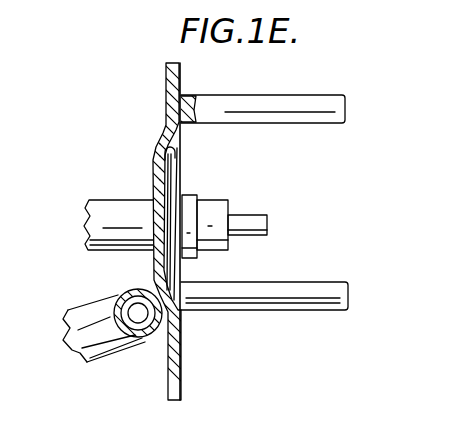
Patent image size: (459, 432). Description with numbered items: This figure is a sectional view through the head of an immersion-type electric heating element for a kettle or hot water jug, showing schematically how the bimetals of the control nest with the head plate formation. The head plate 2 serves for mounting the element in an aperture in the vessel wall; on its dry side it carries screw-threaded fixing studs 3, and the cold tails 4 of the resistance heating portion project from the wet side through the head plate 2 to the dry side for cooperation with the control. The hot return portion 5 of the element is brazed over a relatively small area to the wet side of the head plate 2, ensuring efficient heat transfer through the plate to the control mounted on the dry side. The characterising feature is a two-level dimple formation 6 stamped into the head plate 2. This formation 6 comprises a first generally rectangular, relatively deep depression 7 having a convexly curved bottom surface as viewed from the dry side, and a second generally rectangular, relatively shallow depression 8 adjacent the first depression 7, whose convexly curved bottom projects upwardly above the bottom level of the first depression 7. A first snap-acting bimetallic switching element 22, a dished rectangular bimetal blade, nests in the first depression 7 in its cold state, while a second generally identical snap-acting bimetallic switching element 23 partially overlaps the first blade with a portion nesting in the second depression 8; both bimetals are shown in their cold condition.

The head plate 2 is at (165, 78).
The screw-threaded fixing studs 3 is at (268, 103).
The cold tails 4 is at (258, 213).
The hot return portion 5 is at (150, 347).
The two-level dimple formation 6 is at (186, 152).
The first depression 7 is at (178, 177).
The second depression 8 is at (182, 344).
The first snap-acting bimetallic switching element 22 is at (168, 147).
The second snap-acting bimetallic switching element 23 is at (185, 270).